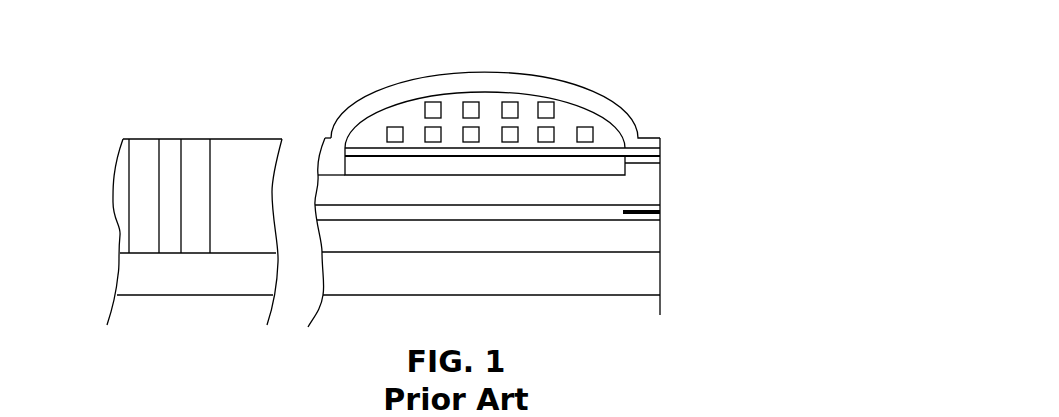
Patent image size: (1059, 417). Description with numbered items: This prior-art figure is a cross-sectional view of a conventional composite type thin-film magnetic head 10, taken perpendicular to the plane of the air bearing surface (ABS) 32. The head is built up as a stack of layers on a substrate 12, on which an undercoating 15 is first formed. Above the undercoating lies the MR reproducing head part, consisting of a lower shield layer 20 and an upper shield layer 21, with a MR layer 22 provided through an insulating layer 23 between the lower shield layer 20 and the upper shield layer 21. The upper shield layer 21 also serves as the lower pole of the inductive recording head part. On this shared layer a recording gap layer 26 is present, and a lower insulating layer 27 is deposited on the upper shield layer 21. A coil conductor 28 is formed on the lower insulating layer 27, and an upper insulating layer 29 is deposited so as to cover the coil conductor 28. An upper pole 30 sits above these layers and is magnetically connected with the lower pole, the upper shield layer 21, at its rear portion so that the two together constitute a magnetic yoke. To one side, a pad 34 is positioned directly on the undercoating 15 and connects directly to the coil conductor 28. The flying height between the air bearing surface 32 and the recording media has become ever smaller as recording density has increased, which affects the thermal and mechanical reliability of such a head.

The composite type thin-film magnetic head 10 is at (124, 80).
The substrate 12 is at (662, 305).
The undercoating 15 is at (662, 265).
The lower shield layer 20 is at (662, 235).
The upper shield layer 21 is at (662, 186).
The MR layer 22 is at (662, 213).
The insulating layer 23 is at (557, 208).
The recording gap layer 26 is at (662, 144).
The lower insulating layer 27 is at (662, 164).
The coil conductor 28 is at (543, 102).
The upper insulating layer 29 is at (448, 102).
The upper pole 30 is at (653, 136).
The air bearing surface 32 is at (676, 288).
The pad 34 is at (129, 237).